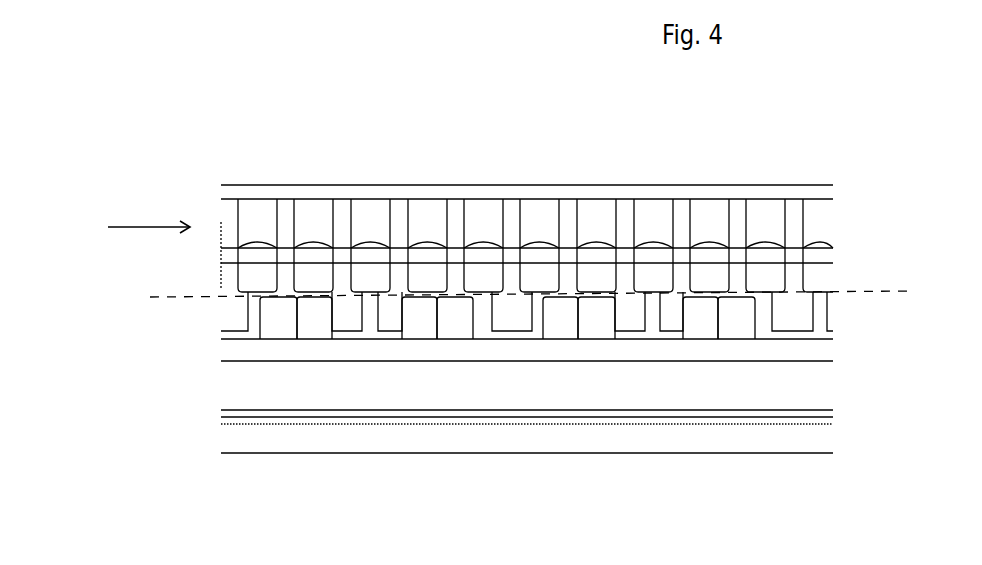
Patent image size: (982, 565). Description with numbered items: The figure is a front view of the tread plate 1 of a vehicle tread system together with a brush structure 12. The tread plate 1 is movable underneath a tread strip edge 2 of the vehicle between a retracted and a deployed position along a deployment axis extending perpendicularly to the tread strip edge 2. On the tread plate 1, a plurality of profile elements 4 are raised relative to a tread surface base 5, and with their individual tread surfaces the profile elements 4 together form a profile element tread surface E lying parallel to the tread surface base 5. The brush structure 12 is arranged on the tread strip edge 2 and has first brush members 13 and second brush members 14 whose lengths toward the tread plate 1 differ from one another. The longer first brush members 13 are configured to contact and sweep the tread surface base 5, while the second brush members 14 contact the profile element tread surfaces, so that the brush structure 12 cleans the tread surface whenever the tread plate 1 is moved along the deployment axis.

The tread plate 1 is at (403, 353).
The tread strip edge 2 is at (398, 185).
The profile element 4 is at (728, 315).
The tread surface base 5 is at (657, 338).
The brush structure 12 is at (134, 225).
The first brush member 13 is at (802, 314).
The second brush member 14 is at (258, 282).
The profile element tread surface E is at (893, 290).